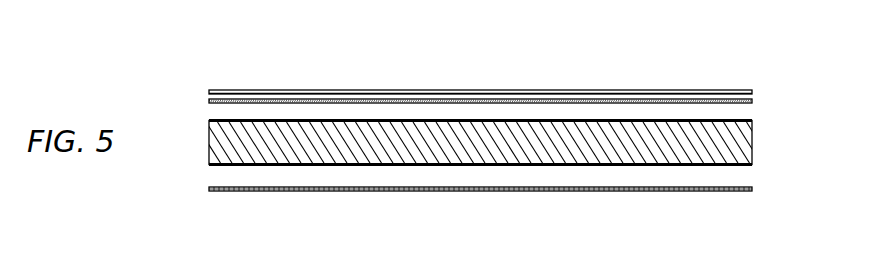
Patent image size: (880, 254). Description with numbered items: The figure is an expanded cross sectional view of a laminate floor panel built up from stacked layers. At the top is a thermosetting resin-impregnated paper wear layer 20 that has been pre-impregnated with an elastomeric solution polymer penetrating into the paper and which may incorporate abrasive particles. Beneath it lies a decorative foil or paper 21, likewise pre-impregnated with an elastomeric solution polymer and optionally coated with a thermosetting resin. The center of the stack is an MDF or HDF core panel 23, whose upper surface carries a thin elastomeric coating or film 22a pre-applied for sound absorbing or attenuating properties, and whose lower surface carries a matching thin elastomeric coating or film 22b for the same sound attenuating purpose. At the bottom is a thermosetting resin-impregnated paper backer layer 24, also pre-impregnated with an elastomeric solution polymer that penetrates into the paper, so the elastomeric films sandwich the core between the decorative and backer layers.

The thermosetting resin-impregnated paper wear layer 20 is at (752, 92).
The decorative foil or paper 21 is at (755, 102).
The thin elastomeric coating or film 22a is at (755, 122).
The MDF or HDF core panel 23 is at (755, 146).
The thin elastomeric coating or film 22b is at (755, 163).
The thermosetting resin-impregnated paper backer layer 24 is at (755, 188).